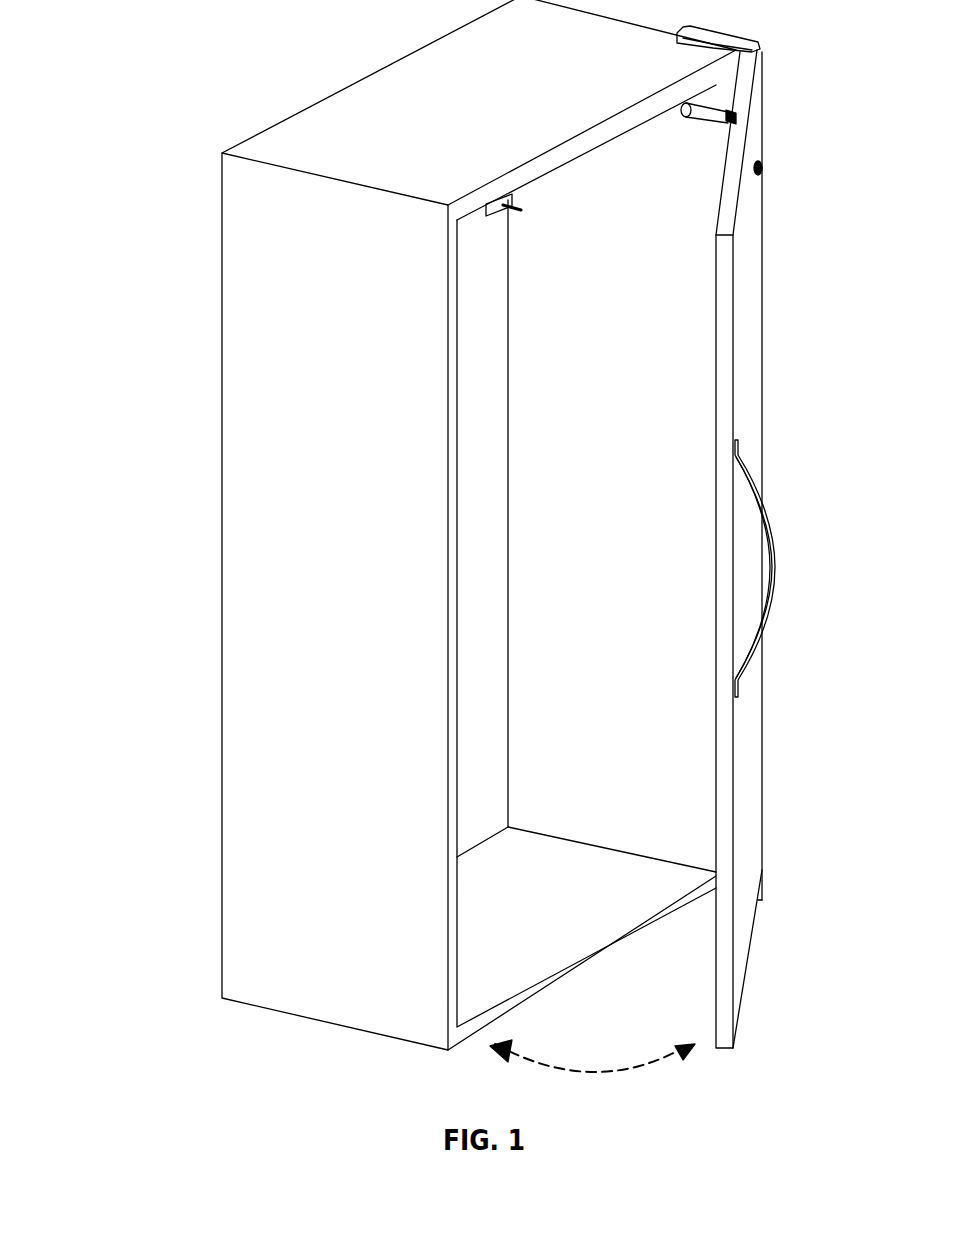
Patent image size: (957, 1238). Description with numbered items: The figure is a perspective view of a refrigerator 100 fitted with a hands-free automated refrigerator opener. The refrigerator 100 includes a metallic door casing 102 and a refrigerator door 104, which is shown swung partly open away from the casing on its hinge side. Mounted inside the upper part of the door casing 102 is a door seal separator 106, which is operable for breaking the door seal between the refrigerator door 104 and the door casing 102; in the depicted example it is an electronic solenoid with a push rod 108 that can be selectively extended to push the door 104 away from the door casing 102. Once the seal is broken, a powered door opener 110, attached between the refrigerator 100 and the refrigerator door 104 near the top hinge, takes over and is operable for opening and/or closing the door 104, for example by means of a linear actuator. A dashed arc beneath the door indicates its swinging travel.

The refrigerator 100 is at (283, 238).
The metallic door casing 102 is at (452, 588).
The refrigerator door 104 is at (740, 965).
The door seal separator 106 is at (488, 216).
The push rod 108 is at (512, 207).
The powered door opener 110 is at (690, 100).